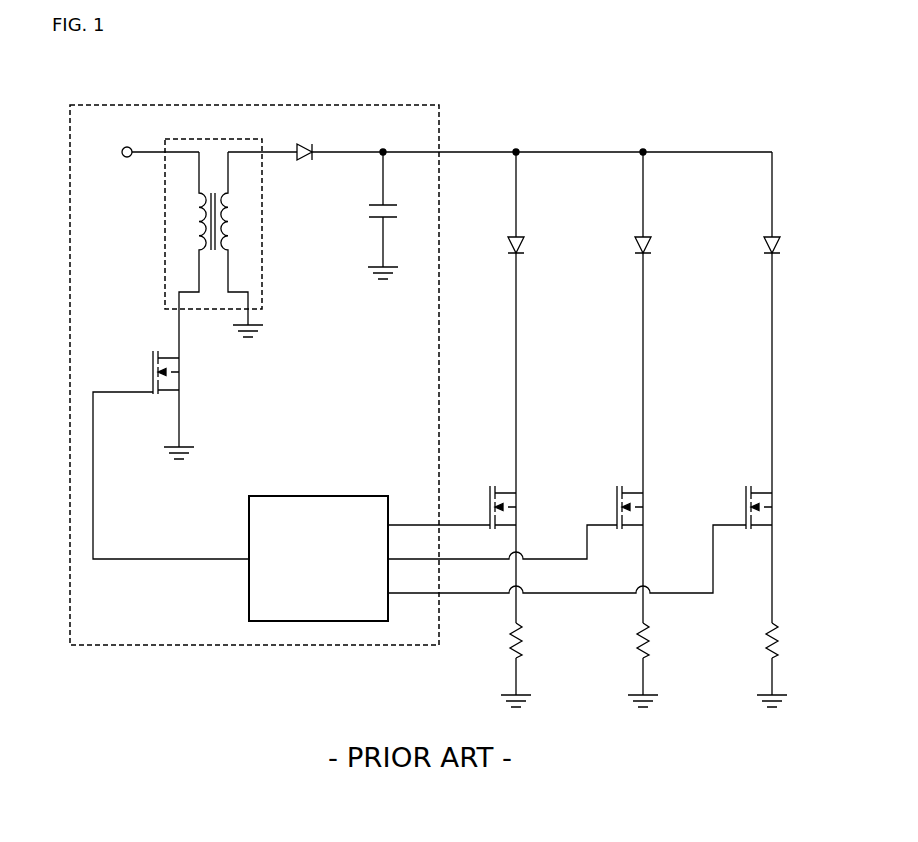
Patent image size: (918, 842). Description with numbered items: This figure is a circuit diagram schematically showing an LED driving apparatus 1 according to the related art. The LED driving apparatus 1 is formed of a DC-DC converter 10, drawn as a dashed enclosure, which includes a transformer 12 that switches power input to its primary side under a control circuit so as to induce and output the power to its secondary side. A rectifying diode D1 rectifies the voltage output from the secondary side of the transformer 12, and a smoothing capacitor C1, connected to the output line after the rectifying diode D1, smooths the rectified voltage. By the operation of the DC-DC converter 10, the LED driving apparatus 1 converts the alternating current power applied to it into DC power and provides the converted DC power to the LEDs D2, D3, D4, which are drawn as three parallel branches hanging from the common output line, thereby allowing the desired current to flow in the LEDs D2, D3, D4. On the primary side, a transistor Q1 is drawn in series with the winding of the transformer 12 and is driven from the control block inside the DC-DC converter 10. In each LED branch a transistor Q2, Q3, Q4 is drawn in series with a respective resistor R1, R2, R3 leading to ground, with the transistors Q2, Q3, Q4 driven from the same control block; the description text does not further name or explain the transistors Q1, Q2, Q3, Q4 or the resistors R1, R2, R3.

The LED driving apparatus 1 is at (46, 84).
The DC-DC converter 10 is at (254, 412).
The transformer 12 is at (162, 228).
The rectifying diode D1 is at (308, 137).
The smoothing capacitor C1 is at (398, 215).
The LED D2 is at (534, 322).
The LED D3 is at (661, 322).
The LED D4 is at (789, 322).
The switching transistor Q1 is at (171, 455).
The current control transistor Q2 is at (522, 507).
The current control transistor Q3 is at (649, 507).
The current control transistor Q4 is at (778, 507).
The current sensing resistor R1 is at (528, 616).
The current sensing resistor R2 is at (655, 616).
The current sensing resistor R3 is at (784, 616).